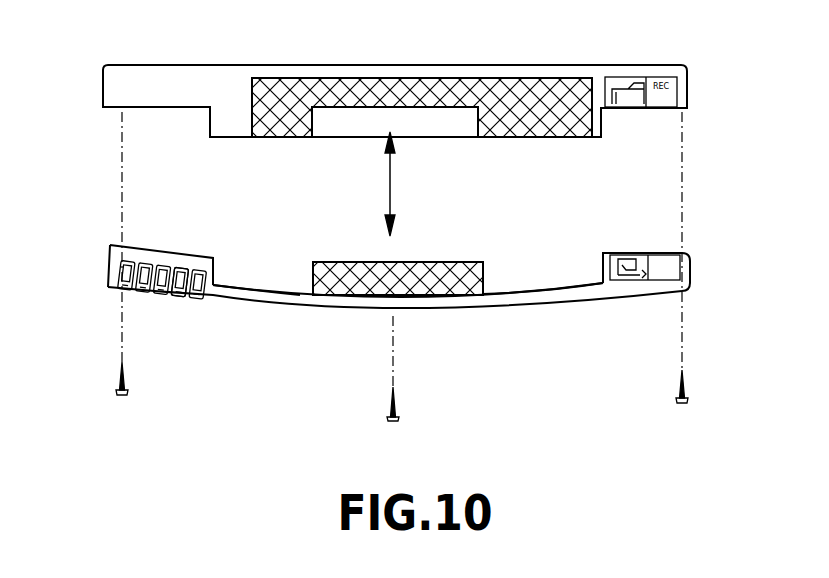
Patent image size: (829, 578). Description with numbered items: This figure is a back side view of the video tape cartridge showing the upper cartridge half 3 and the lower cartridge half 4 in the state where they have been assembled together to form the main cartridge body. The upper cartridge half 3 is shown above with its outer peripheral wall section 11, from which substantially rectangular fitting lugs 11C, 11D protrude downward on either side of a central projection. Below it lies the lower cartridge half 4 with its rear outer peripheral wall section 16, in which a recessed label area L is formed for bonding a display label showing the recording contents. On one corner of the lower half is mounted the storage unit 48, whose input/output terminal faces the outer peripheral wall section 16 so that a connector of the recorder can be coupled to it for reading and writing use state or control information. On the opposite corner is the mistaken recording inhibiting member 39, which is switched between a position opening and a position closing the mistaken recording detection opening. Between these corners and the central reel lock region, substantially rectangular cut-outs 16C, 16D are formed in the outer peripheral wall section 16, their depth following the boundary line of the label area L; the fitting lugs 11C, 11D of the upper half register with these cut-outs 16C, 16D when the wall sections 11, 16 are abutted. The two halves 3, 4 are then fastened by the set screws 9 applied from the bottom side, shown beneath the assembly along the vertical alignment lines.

The upper cartridge half 3 is at (570, 69).
The outer peripheral wall section 11 is at (137, 88).
The label area L is at (290, 100).
The fitting lug 11C is at (314, 128).
The fitting lug 11D is at (471, 128).
The lower cartridge half 4 is at (540, 300).
The outer peripheral wall section 16 is at (117, 258).
The storage unit 48 is at (180, 281).
The cut-out 16C is at (262, 287).
The cut-out 16D is at (503, 295).
The mistaken recording inhibiting member 39 is at (635, 256).
The set screw 9 is at (117, 394).